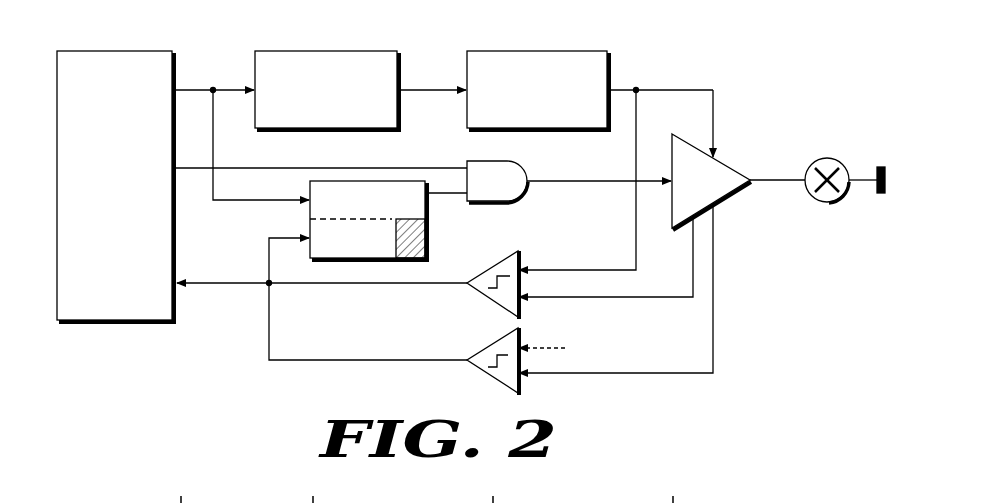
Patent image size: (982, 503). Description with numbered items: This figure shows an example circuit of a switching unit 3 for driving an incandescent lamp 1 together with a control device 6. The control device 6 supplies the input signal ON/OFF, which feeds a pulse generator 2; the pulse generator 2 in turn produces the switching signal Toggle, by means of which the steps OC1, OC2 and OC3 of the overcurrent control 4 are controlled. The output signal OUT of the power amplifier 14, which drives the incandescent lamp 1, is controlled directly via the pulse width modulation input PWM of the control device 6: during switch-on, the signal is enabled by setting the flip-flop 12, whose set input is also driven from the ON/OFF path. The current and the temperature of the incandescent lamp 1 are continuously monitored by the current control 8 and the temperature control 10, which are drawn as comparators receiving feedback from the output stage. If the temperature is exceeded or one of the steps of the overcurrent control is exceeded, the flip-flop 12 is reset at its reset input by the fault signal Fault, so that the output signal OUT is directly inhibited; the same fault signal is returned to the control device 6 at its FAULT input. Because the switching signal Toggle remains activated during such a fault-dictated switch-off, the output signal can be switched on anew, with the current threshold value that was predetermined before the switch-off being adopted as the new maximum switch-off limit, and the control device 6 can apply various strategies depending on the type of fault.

The incandescent lamp 1 is at (825, 158).
The pulse generator 2 is at (353, 50).
The switching unit 3 is at (676, 28).
The overcurrent control 4 is at (563, 50).
The control device 6 is at (140, 325).
The current control 8 is at (486, 268).
The temperature control 10 is at (488, 343).
The flip-flop 12 is at (360, 262).
The power amplifier 14 is at (728, 205).